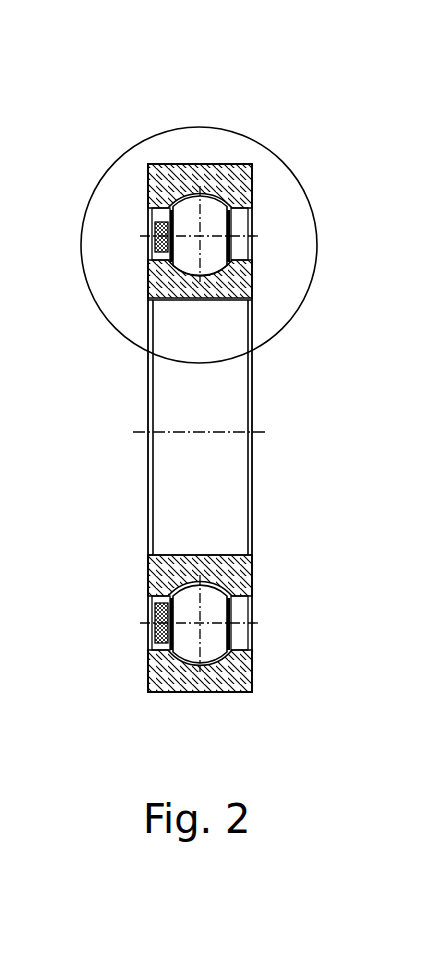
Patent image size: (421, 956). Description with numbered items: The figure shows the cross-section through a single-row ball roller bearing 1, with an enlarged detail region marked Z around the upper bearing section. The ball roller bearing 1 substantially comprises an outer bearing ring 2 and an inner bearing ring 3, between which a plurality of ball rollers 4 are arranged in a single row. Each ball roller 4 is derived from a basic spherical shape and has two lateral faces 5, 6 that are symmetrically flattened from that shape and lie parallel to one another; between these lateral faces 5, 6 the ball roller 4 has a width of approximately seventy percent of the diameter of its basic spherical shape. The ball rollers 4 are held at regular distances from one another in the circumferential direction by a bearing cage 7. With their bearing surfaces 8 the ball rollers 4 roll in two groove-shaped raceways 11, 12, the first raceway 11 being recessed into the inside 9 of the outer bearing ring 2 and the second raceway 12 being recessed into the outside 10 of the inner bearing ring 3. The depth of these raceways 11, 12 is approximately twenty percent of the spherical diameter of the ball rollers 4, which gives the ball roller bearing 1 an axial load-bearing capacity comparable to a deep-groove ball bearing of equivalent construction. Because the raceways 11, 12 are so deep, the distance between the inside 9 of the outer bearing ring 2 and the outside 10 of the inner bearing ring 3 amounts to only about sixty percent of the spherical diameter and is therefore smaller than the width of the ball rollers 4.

The ball roller bearing 1 is at (170, 164).
The outer bearing ring 2 is at (211, 196).
The inner bearing ring 3 is at (250, 272).
The ball roller 4 is at (147, 256).
The lateral face 5 is at (147, 213).
The lateral face 6 is at (250, 220).
The bearing cage 7 is at (150, 236).
The bearing surface 8 is at (230, 288).
The inside of the outer bearing ring 9 is at (250, 638).
The outside of the inner bearing ring 10 is at (147, 612).
The raceway 11 is at (147, 667).
The raceway 12 is at (250, 580).
The detail region Z is at (288, 168).